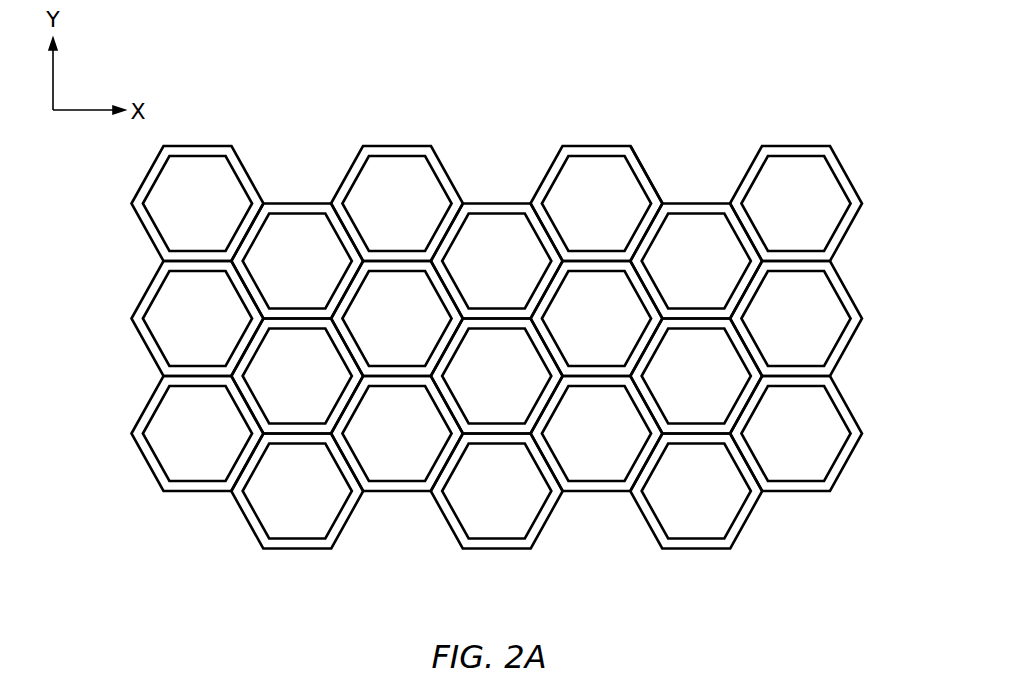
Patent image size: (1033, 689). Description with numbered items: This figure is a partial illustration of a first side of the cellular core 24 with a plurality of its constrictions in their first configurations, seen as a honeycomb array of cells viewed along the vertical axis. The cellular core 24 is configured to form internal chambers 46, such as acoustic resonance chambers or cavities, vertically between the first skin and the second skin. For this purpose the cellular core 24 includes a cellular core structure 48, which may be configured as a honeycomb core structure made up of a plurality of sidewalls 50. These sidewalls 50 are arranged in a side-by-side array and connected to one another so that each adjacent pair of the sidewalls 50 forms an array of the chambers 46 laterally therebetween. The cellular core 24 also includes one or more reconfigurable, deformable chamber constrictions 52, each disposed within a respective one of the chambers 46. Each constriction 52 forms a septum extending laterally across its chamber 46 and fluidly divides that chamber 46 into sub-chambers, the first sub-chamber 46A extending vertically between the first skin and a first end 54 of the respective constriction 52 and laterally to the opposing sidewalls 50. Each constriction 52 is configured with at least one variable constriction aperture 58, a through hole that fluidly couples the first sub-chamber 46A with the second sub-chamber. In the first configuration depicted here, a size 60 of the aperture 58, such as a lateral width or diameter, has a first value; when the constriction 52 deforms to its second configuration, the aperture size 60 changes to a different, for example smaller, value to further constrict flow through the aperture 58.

The cellular core 24 is at (849, 105).
The internal chambers 46 is at (808, 237).
The first sub-chamber 46A is at (278, 272).
The cellular core structure 48 is at (646, 158).
The sidewalls 50 is at (848, 345).
The chamber constrictions 52 is at (493, 207).
The first end 54 is at (292, 207).
The variable constriction aperture 58 is at (483, 272).
The size 60 is at (697, 221).